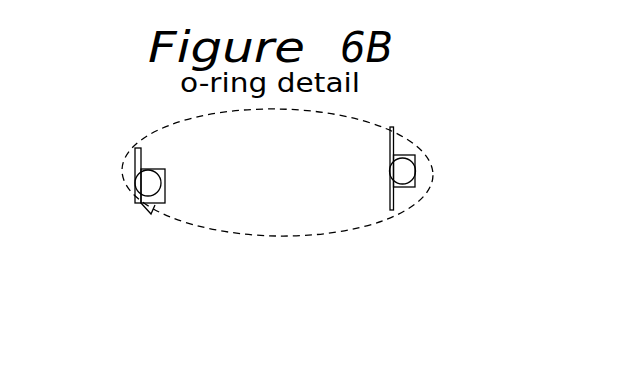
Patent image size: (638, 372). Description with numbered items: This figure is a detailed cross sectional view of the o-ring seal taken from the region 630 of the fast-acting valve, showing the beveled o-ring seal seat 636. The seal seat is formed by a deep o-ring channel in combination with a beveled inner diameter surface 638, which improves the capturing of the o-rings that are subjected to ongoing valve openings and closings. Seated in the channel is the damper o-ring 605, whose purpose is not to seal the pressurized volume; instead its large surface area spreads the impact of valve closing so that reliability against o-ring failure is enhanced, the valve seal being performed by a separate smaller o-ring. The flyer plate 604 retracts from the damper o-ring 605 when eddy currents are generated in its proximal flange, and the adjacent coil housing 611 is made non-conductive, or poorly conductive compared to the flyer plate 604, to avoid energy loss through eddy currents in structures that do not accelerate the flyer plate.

The region 630 is at (265, 237).
The coil housing 611 is at (162, 150).
The flyer plate 604 is at (134, 152).
The beveled o-ring seal seat 636 is at (167, 198).
The damper o-ring 605 is at (150, 187).
The beveled inner diameter surface 638 is at (155, 204).